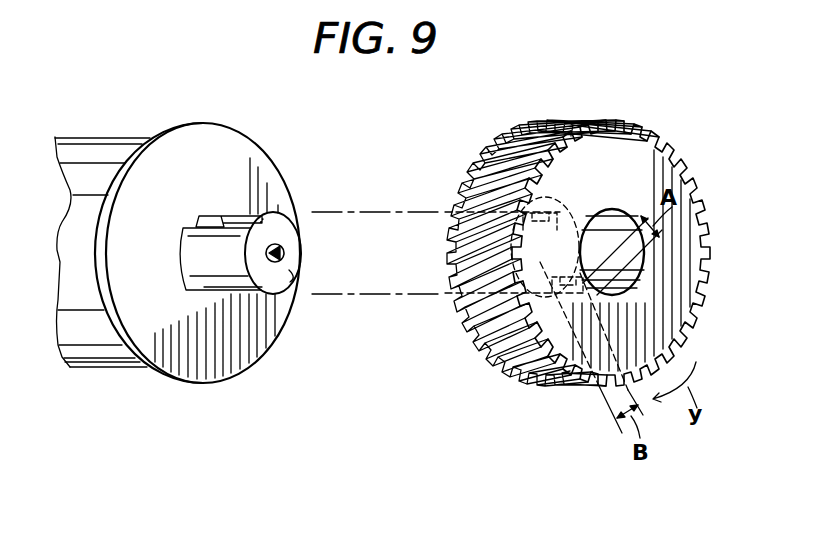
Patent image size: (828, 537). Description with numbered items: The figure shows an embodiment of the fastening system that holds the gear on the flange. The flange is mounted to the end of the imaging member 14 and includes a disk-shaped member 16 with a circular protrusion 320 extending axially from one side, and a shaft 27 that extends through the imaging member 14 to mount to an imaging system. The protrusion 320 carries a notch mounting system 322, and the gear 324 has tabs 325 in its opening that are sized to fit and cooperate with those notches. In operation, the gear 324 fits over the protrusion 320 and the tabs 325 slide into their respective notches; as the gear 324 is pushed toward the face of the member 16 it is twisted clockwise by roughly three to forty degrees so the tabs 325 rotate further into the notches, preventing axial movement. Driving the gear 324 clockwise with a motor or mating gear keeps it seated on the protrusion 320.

The imaging member 14 is at (115, 142).
The member 16 is at (221, 137).
The shaft 27 is at (287, 253).
The protrusion 320 is at (233, 280).
The notch mounting system 322 is at (212, 217).
The gear 324 is at (672, 172).
The tabs 325 is at (562, 193).